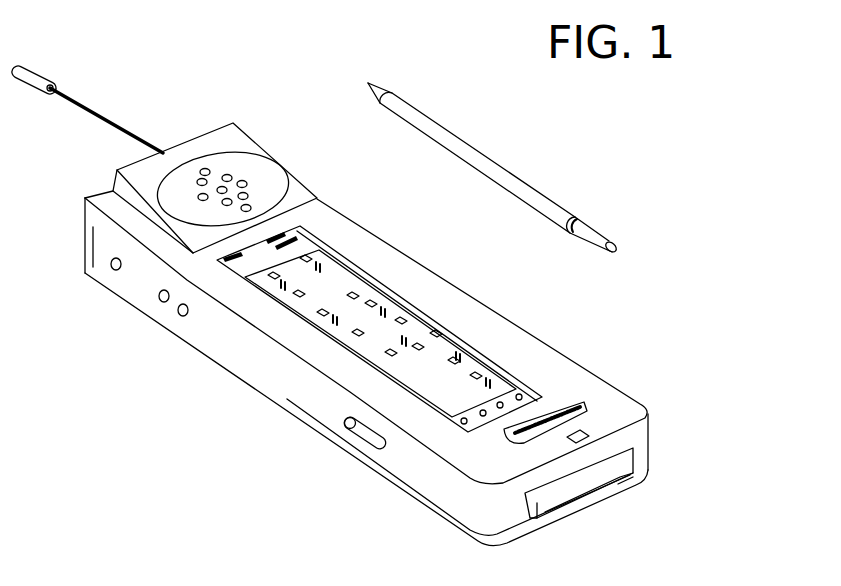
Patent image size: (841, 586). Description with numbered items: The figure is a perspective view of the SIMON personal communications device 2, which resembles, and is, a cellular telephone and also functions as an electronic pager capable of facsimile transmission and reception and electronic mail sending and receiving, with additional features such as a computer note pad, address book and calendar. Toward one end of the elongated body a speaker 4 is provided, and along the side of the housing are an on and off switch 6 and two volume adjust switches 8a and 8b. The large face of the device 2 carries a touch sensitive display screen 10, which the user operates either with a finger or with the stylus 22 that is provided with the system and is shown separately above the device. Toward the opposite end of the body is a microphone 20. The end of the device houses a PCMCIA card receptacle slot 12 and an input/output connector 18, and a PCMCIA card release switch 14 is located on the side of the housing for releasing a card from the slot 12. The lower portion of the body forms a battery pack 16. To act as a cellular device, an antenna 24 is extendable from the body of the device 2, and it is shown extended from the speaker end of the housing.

The personal communications device 2 is at (684, 248).
The speaker 4 is at (230, 173).
The on and off switch 6 is at (112, 268).
The volume adjust switch 8a is at (160, 298).
The volume adjust switch 8b is at (181, 313).
The touch sensitive display screen 10 is at (307, 300).
The PCMCIA card receptacle slot 12 is at (562, 488).
The PCMCIA card release switch 14 is at (350, 423).
The battery pack 16 is at (405, 487).
The input/output connector 18 is at (627, 477).
The microphone 20 is at (572, 402).
The stylus 22 is at (488, 157).
The antenna 24 is at (78, 98).